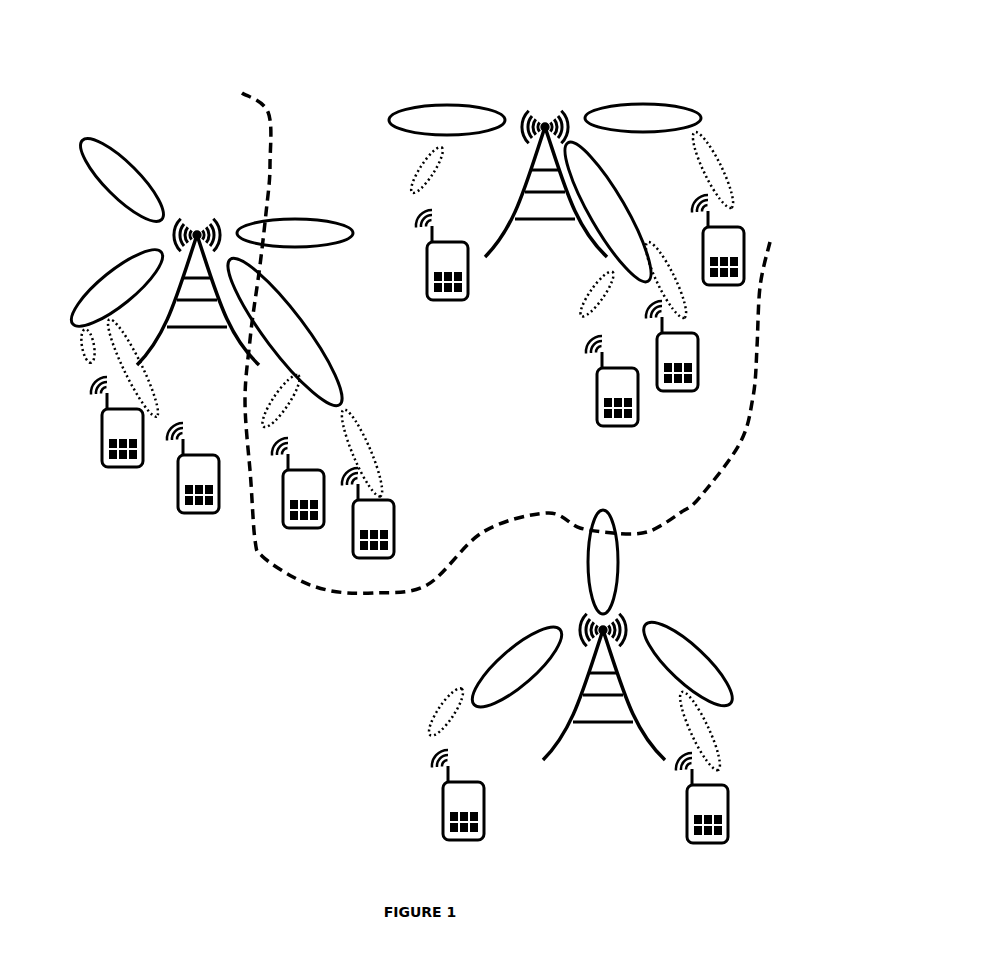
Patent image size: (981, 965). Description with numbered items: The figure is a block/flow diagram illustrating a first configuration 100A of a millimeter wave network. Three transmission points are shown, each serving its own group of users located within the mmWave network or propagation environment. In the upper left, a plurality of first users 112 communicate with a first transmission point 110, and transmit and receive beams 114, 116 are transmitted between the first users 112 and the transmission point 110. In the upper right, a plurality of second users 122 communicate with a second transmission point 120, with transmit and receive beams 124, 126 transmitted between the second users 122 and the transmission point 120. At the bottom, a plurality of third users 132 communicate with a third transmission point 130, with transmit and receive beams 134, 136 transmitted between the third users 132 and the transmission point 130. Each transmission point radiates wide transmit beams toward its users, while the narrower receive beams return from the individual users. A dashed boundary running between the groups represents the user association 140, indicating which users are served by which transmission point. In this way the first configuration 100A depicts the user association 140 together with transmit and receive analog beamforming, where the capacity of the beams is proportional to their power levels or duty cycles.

The first configuration 100A is at (615, 47).
The transmission point 110 is at (195, 213).
The first users 112 is at (103, 470).
The transmit beams 114 is at (118, 147).
The receive beams 116 is at (153, 387).
The transmission point 120 is at (545, 108).
The second users 122 is at (450, 300).
The transmit beams 124 is at (438, 105).
The receive beams 126 is at (435, 178).
The transmission point 130 is at (632, 598).
The third users 132 is at (490, 813).
The transmit beams 134 is at (580, 570).
The receive beams 136 is at (447, 698).
The user association 140 is at (327, 590).